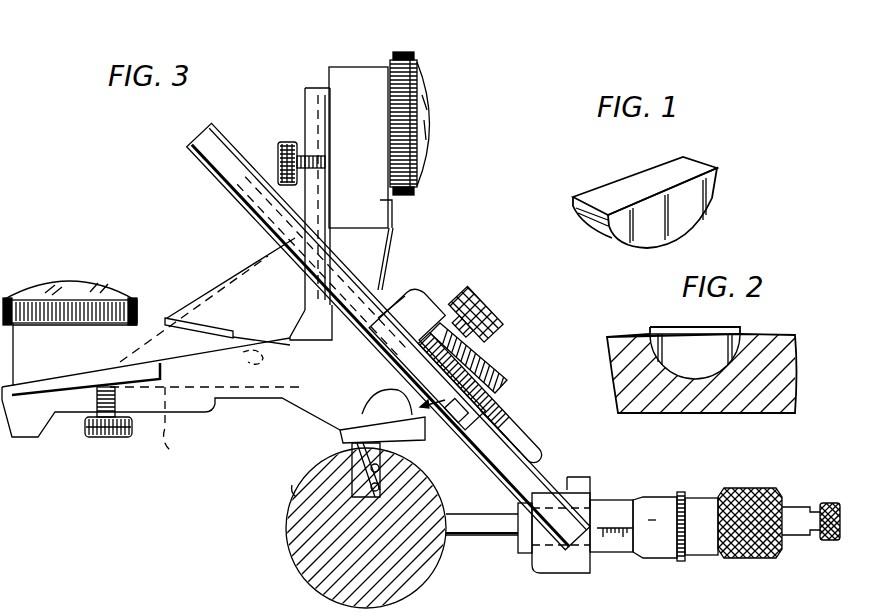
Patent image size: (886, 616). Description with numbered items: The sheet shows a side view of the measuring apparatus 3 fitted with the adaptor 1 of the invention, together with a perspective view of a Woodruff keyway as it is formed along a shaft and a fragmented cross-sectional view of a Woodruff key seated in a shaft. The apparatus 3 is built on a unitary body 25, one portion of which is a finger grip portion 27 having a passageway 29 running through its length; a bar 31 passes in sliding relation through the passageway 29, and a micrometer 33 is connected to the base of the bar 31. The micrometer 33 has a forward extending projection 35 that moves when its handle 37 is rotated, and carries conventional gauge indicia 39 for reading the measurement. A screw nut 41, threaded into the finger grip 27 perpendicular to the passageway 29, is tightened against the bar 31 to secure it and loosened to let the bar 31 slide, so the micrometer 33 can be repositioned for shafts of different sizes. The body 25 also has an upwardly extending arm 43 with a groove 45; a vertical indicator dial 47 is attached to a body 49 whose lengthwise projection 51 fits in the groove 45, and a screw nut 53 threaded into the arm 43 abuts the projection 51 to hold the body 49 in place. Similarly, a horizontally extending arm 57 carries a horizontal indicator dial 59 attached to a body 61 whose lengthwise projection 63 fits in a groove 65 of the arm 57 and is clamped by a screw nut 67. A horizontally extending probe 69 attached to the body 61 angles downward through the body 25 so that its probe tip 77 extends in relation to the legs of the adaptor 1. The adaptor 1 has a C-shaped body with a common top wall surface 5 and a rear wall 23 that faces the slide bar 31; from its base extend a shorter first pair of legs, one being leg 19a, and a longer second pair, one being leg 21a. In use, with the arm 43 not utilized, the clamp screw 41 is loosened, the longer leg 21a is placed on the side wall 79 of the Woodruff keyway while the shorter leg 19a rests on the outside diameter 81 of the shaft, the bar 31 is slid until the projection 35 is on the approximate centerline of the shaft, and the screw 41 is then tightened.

The adaptor 1 is at (436, 392).
The measuring apparatus 3 is at (160, 188).
The top wall surface 5 is at (387, 418).
The first leg 19a is at (393, 447).
The second leg 21a is at (382, 469).
The rear wall 23 is at (522, 432).
The unitary body 25 is at (462, 368).
The finger grip portion 27 is at (414, 294).
The passageway 29 is at (500, 398).
The bar 31 is at (207, 176).
The micrometer 33 is at (748, 484).
The forward extending member 35 is at (478, 537).
The handle 37 is at (737, 560).
The gauge indicia 39 is at (620, 540).
The screw nut 41 is at (497, 312).
The upwardly extending arm 43 is at (305, 130).
The groove 45 is at (305, 135).
The indicator dial 47 is at (430, 100).
The body 49 is at (363, 75).
The lengthwise projection 51 is at (330, 80).
The screw nut 53 is at (280, 148).
The horizontally extending arm 57 is at (185, 406).
The horizontal indicator dial 59 is at (90, 286).
The body 61 is at (78, 360).
The lengthwise projection 63 is at (185, 429).
The groove 65 is at (222, 395).
The screw nut 67 is at (106, 438).
The horizontally extending probe 69 is at (342, 430).
The probe tip 77 is at (382, 488).
The side wall 79 is at (360, 528).
The outside diameter 81 is at (292, 490).